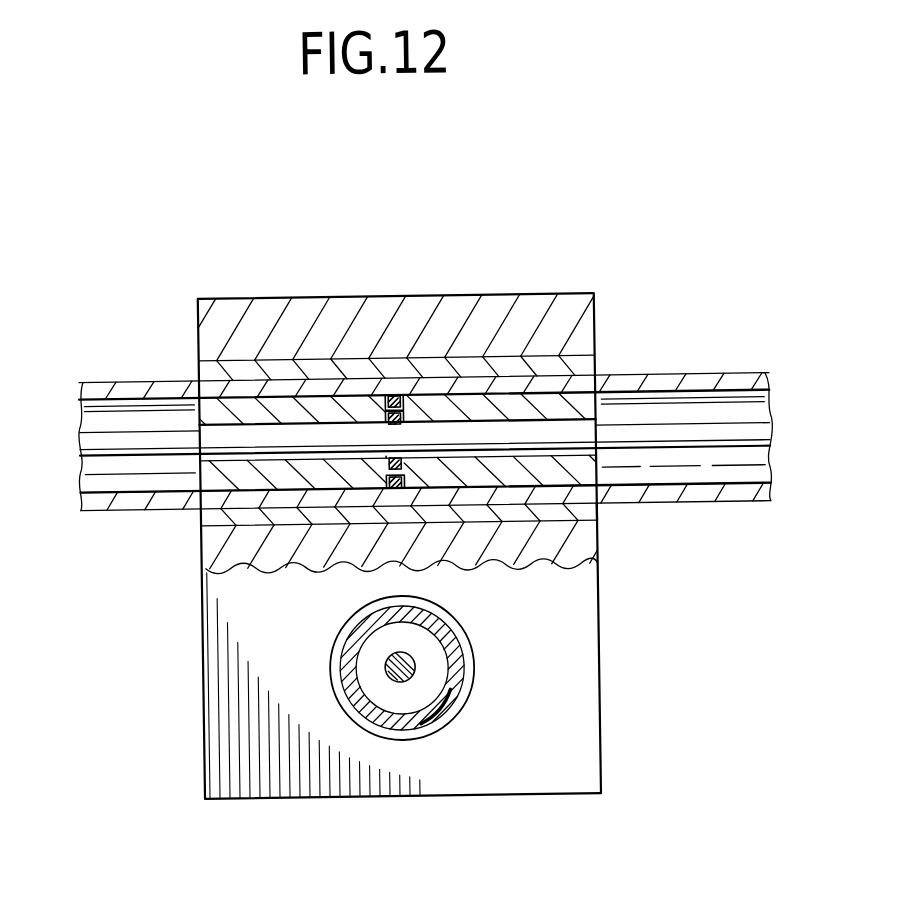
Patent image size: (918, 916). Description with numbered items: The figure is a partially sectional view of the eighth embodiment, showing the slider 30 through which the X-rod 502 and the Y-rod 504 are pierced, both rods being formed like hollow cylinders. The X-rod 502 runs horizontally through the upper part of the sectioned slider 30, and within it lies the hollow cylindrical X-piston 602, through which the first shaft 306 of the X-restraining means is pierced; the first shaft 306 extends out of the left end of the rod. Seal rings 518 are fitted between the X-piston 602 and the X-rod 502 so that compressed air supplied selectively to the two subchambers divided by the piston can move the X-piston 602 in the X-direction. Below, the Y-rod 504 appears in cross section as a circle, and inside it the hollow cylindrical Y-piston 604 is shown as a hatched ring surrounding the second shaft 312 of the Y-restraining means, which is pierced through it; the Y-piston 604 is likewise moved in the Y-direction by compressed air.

The slider 30 is at (521, 307).
The X-rod 502 is at (708, 389).
The first shaft 306 is at (112, 439).
The seal rings 518 is at (396, 395).
The X-piston 602 is at (598, 476).
The Y-rod 504 is at (327, 666).
The Y-piston 604 is at (374, 687).
The second shaft 312 is at (402, 680).